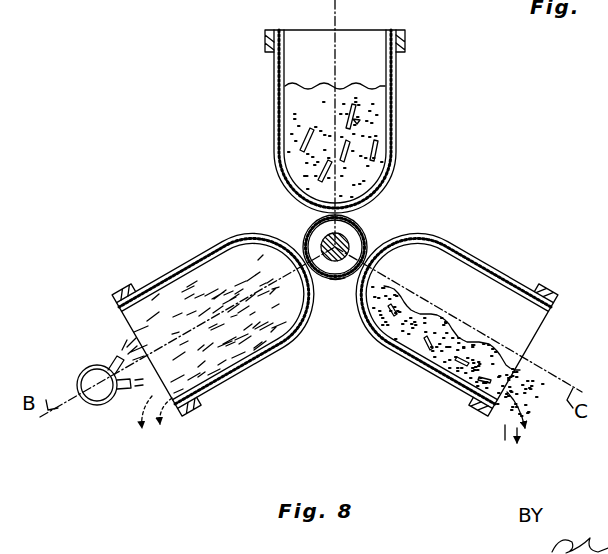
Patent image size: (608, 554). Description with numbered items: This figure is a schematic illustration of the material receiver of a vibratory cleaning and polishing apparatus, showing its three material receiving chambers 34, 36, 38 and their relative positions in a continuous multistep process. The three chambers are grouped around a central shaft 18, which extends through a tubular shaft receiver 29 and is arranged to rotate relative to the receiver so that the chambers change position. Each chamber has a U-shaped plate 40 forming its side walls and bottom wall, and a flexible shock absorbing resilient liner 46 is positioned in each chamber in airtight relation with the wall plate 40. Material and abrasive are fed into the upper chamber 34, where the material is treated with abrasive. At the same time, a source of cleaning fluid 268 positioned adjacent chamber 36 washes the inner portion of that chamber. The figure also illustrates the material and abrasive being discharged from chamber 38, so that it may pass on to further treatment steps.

The shaft 18 is at (348, 240).
The tubular shaft receiver 29 is at (341, 276).
The material receiving chamber 34 is at (347, 26).
The material receiving chamber 36 is at (121, 325).
The material receiving chamber 38 is at (543, 336).
The U-shaped plate 40 is at (396, 155).
The flexible shock absorbing resilient liner 46 is at (283, 45).
The source of cleaning fluid 268 is at (96, 405).